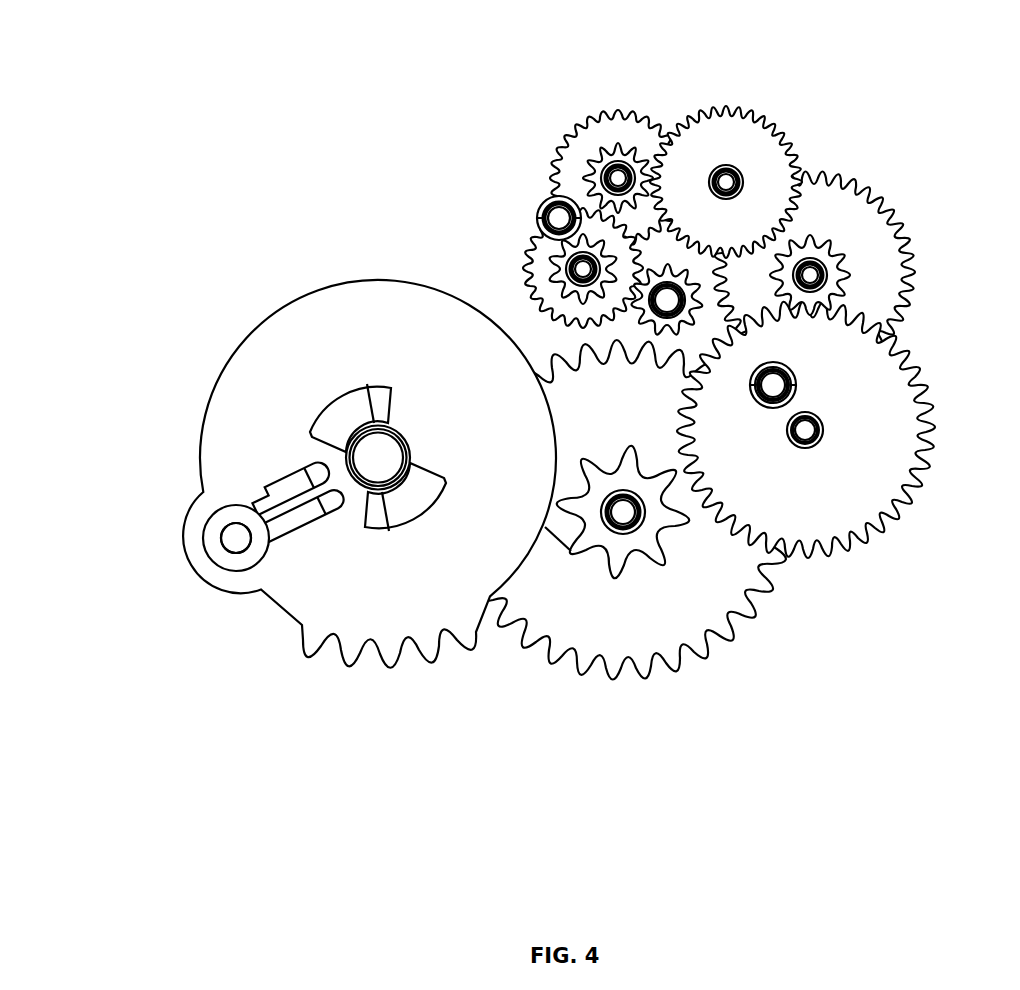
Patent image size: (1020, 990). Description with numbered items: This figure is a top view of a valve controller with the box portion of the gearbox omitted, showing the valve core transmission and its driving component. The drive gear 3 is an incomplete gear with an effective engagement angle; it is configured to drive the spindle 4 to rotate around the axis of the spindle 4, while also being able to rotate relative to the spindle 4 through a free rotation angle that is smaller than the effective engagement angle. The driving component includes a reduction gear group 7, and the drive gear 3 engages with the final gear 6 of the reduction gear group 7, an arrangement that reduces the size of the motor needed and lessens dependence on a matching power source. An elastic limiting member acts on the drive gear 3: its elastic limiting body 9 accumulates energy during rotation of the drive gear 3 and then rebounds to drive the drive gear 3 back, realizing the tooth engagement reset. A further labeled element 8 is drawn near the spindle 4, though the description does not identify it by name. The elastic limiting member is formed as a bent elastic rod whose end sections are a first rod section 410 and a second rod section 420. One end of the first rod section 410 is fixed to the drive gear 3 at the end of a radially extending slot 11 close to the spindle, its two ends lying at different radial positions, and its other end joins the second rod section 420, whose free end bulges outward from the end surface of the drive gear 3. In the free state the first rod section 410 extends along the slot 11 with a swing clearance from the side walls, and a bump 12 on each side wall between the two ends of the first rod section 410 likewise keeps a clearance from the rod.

The drive gear 3 is at (322, 330).
The spindle 4 is at (372, 478).
The final gear 6 is at (687, 610).
The reduction gear group 7 is at (779, 476).
The cam 8 is at (372, 405).
The elastic limiting body 9 is at (236, 535).
The slot 11 is at (316, 515).
The bump 12 is at (276, 548).
The first rod section 410 is at (272, 519).
The second rod section 420 is at (221, 542).